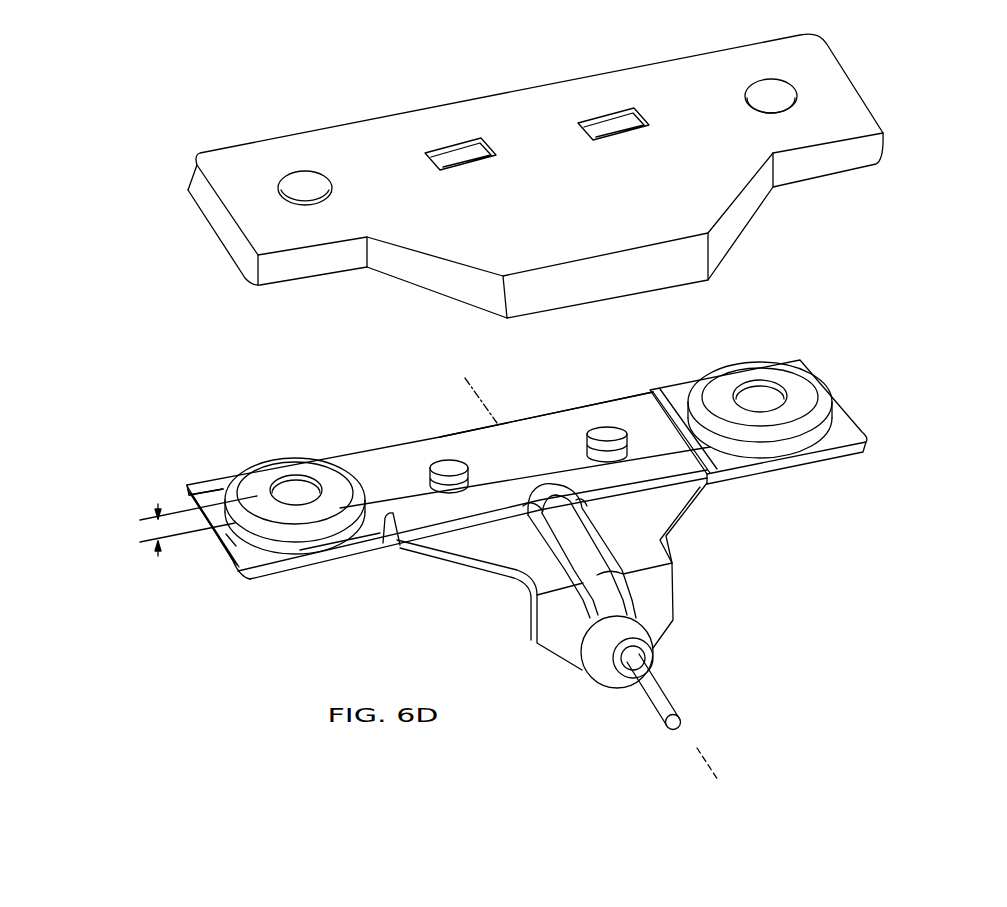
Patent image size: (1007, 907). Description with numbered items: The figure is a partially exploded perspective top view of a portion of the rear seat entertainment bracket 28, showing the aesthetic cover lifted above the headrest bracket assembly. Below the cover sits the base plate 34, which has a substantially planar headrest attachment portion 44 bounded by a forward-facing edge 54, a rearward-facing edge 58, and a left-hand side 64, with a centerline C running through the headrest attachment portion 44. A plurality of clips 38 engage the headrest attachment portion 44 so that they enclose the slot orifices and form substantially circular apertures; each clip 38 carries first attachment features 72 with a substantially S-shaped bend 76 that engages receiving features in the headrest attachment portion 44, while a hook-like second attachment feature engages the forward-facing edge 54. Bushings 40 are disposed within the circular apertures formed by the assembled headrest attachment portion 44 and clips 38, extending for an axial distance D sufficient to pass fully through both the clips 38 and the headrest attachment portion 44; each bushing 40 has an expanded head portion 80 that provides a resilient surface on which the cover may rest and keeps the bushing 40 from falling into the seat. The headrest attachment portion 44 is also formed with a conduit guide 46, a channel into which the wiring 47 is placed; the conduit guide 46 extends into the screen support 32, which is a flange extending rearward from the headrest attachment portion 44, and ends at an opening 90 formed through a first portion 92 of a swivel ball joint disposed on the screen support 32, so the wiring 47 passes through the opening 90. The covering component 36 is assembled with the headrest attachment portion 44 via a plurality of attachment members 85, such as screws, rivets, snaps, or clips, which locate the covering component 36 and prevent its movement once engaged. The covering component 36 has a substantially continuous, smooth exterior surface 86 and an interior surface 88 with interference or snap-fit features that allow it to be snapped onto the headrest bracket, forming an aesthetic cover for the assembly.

The rear seat entertainment bracket 28 is at (105, 57).
The screen support 32 is at (686, 641).
The base plate 34 is at (902, 377).
The covering component 36 is at (530, 163).
The clips 38 is at (218, 487).
The bushings 40 is at (558, 451).
The headrest attachment portion 44 is at (543, 435).
The conduit guide 46 is at (584, 531).
The wiring 47 is at (660, 700).
The forward-facing edge 54 is at (452, 439).
The rearward-facing edge 58 is at (438, 545).
The left-hand side 64 is at (220, 549).
The first attachment features 72 is at (219, 551).
The S-shaped bend 76 is at (238, 553).
The expanded head portion 80 is at (317, 530).
The attachment members 85 is at (606, 127).
The exterior surface 86 is at (687, 78).
The interior surface 88 is at (213, 235).
The opening 90 is at (648, 668).
The first portion 92 is at (600, 647).
The centerline C is at (698, 750).
The axial distance D is at (198, 526).